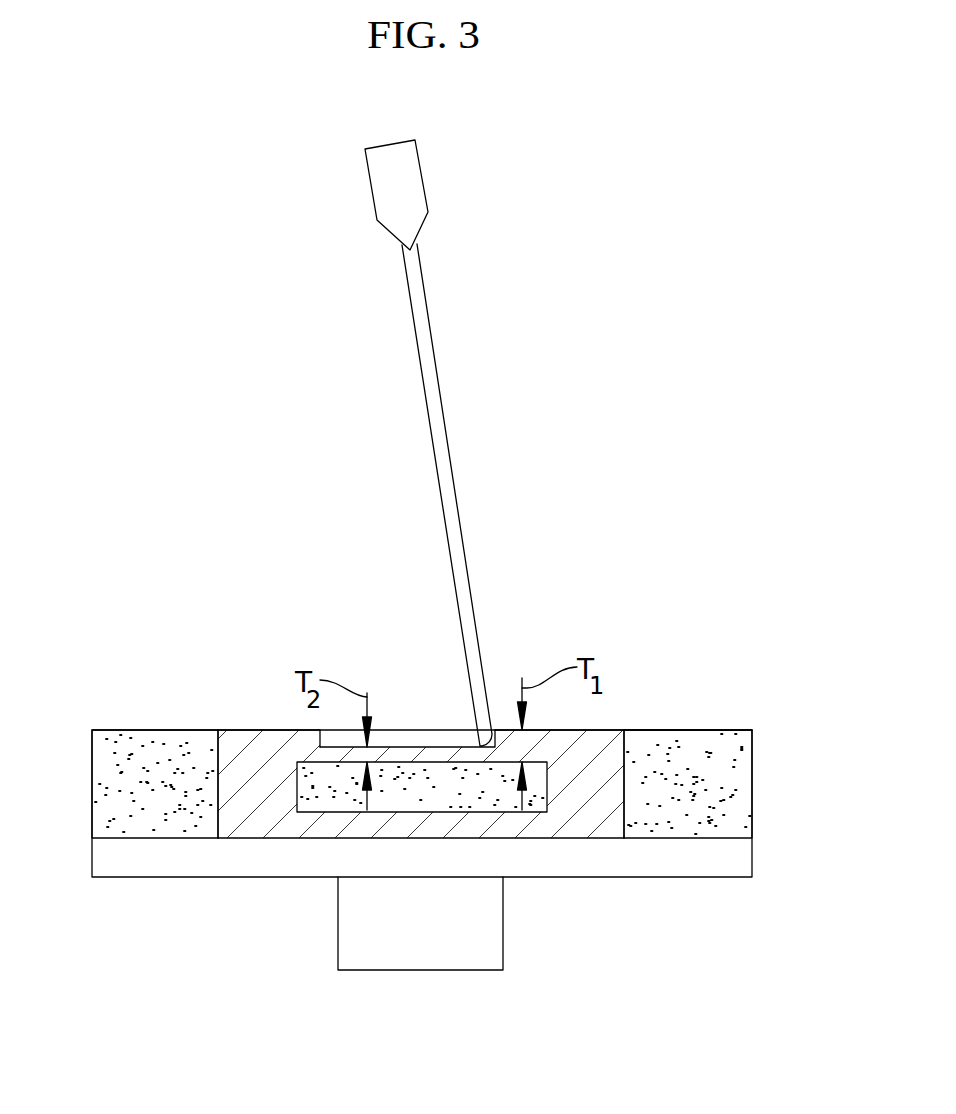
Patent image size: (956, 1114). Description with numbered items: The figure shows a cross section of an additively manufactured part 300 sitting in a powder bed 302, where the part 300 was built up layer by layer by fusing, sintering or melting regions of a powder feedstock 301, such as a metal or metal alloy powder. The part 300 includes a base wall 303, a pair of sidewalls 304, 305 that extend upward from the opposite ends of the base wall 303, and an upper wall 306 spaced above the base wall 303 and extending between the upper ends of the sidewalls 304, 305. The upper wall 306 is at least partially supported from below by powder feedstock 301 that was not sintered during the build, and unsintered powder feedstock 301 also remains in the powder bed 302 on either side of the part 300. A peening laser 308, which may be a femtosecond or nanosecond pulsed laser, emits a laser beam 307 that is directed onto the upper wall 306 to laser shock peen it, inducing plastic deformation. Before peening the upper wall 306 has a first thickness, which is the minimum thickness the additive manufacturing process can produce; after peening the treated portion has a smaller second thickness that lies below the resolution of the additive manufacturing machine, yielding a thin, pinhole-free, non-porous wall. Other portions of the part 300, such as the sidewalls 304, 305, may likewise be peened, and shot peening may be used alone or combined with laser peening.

The part 300 is at (255, 700).
The powder feedstock 301 is at (330, 790).
The powder bed 302 is at (713, 706).
The base wall 303 is at (337, 825).
The sidewall 304 is at (248, 760).
The sidewall 305 is at (580, 790).
The upper wall 306 is at (522, 745).
The laser beam 307 is at (460, 522).
The peening laser 308 is at (423, 173).